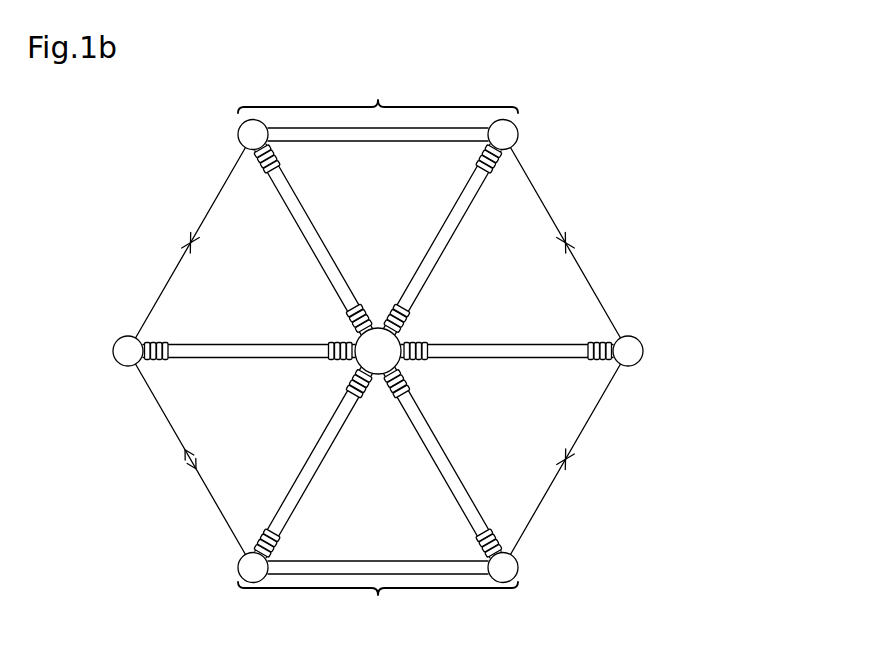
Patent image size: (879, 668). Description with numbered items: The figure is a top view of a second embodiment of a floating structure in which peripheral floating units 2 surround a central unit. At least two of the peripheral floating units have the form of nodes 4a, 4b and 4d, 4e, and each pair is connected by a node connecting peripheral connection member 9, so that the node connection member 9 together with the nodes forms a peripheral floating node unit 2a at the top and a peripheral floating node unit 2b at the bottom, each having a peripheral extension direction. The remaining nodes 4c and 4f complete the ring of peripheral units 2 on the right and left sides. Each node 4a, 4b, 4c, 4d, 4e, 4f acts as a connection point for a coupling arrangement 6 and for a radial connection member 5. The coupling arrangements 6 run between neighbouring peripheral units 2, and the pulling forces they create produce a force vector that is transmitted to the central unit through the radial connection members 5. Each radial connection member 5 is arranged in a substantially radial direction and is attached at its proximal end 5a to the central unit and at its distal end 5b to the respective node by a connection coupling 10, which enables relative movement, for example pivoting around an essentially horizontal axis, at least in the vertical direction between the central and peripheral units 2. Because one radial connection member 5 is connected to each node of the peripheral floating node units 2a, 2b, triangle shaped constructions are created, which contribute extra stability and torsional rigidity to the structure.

The peripheral unit 2 is at (376, 329).
The peripheral floating node unit 2a is at (378, 93).
The peripheral floating node unit 2b is at (378, 605).
The node 4a is at (238, 135).
The node 4b is at (518, 137).
The node 4c is at (642, 352).
The node 4d is at (518, 566).
The node 4e is at (238, 568).
The node 4f is at (113, 351).
The radial connection member 5 is at (507, 326).
The proximal end 5a is at (415, 343).
The distal end 5b is at (594, 344).
The coupling arrangement 6 is at (190, 238).
The peripheral connection member 9 is at (381, 142).
The connection coupling 10 is at (516, 391).